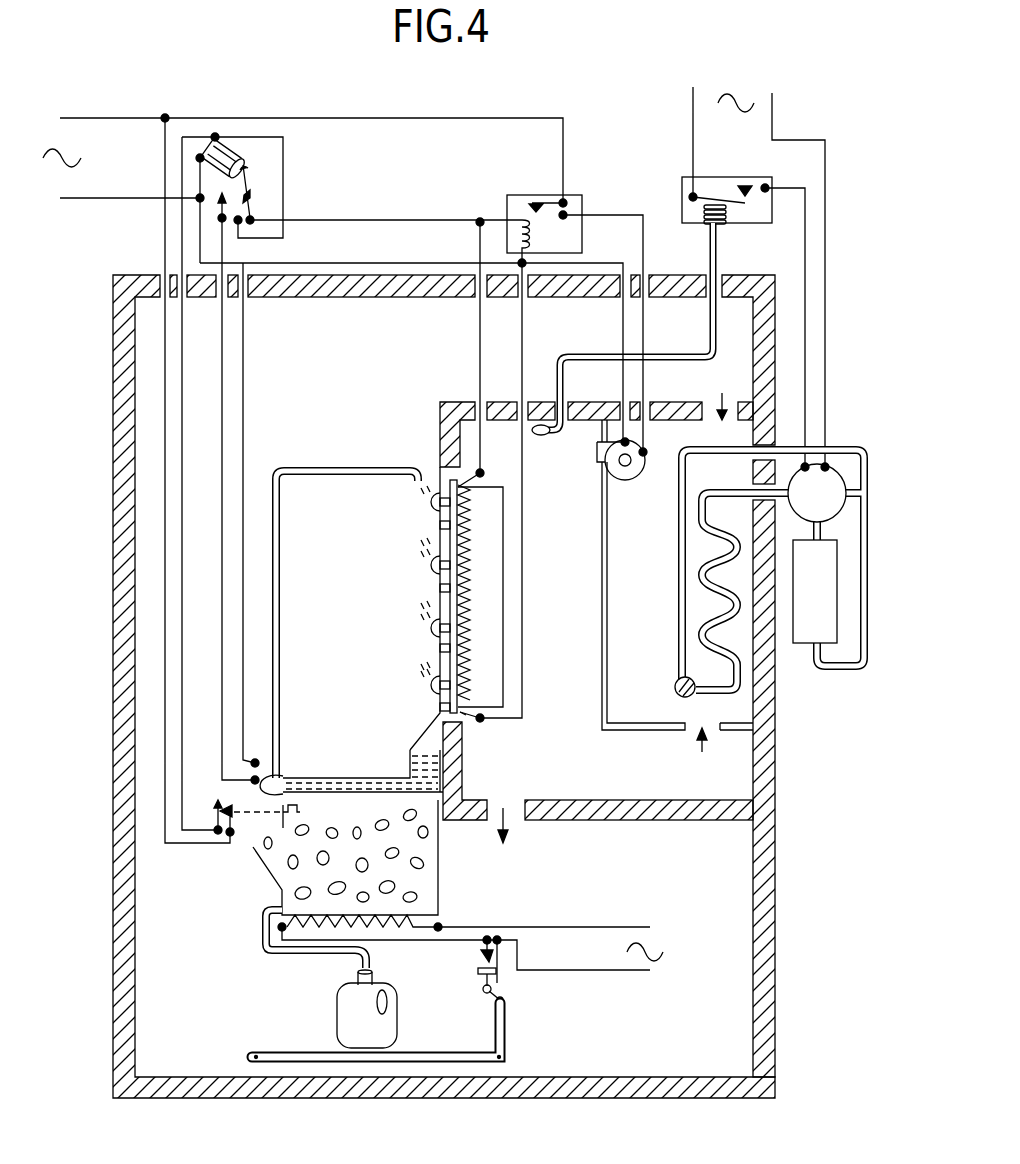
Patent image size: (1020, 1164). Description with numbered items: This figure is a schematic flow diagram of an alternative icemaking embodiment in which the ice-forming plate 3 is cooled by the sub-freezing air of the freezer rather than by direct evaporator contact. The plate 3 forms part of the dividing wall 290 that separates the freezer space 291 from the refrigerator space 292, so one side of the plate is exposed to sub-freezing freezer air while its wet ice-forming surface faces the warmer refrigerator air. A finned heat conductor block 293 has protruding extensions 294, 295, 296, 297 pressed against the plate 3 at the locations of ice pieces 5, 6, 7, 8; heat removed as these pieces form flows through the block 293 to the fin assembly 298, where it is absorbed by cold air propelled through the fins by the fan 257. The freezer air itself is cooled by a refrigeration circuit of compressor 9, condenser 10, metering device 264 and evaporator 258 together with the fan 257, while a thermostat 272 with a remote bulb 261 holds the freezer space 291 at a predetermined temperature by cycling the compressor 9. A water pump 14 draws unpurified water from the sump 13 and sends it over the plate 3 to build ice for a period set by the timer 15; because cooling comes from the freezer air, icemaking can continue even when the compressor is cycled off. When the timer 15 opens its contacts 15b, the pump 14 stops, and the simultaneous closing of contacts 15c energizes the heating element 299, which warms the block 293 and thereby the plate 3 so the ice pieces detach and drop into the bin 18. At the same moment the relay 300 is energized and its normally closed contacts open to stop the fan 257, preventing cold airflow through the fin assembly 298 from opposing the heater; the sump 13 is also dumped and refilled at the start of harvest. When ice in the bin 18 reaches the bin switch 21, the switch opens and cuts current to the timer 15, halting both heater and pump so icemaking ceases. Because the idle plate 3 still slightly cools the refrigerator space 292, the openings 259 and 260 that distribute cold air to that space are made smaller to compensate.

The ice-forming plate 3 is at (440, 470).
The ice piece 5 is at (430, 502).
The ice piece 6 is at (431, 565).
The ice piece 7 is at (431, 628).
The ice piece 8 is at (431, 685).
The compressor 9 is at (846, 495).
The condenser 10 is at (837, 592).
The sump 13 is at (412, 759).
The water pump 14 is at (292, 772).
The timer 15 is at (195, 196).
The contacts 15b is at (208, 205).
The contacts 15c is at (253, 190).
The bin 18 is at (438, 867).
The bin switch 21 is at (222, 845).
The fan 257 is at (582, 453).
The evaporator 258 is at (712, 550).
The opening 259 is at (714, 400).
The opening 260 is at (518, 818).
The remote bulb 261 is at (540, 402).
The metering device 264 is at (662, 680).
The thermostat 272 is at (682, 188).
The dividing wall 290 is at (440, 437).
The freezer space 291 is at (507, 438).
The refrigerator space 292 is at (730, 895).
The finned heat conductor block 293 is at (472, 725).
The protruding extension 294 is at (440, 525).
The protruding extension 295 is at (440, 588).
The protruding extension 296 is at (440, 648).
The protruding extension 297 is at (440, 707).
The fin assembly 298 is at (503, 557).
The heating element 299 is at (470, 597).
The relay 300 is at (507, 208).